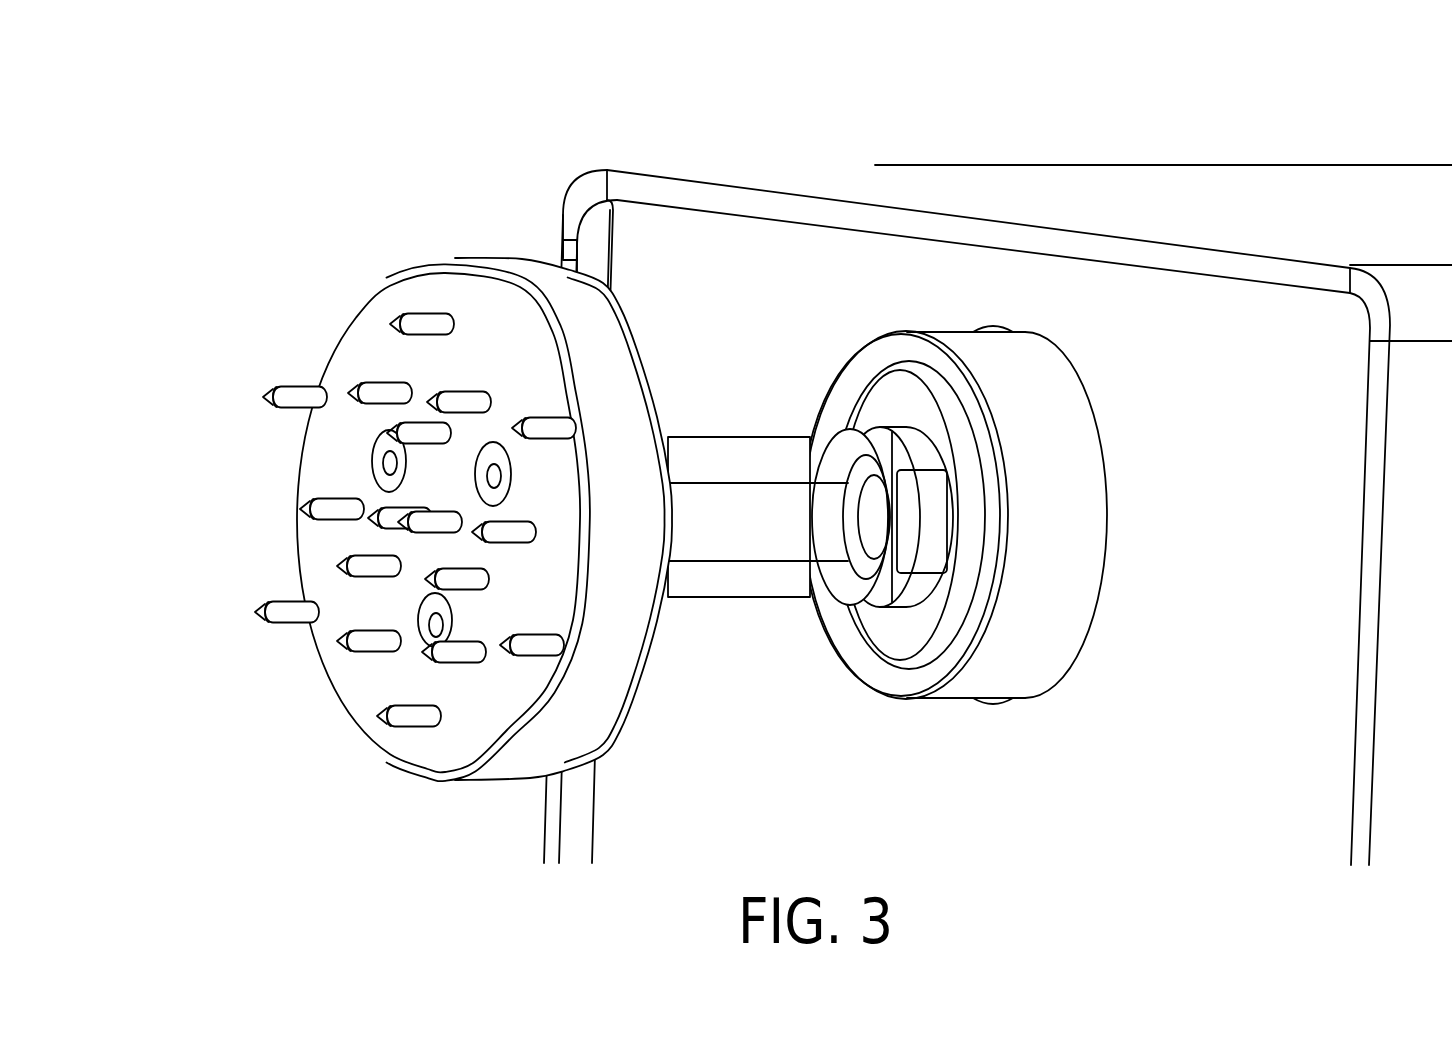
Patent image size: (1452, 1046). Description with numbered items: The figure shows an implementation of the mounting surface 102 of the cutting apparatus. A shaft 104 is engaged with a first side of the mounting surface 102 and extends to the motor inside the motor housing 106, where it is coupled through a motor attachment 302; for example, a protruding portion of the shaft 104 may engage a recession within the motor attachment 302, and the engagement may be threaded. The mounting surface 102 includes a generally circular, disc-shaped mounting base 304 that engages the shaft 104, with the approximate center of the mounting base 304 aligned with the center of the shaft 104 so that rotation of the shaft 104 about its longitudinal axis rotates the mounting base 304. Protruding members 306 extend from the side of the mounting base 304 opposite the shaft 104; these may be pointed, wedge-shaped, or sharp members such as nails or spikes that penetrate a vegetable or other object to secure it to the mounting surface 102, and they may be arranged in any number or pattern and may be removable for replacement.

The mounting surface 102 is at (272, 116).
The shaft 104 is at (737, 467).
The motor housing 106 is at (1190, 208).
The motor attachment 302 is at (860, 447).
The mounting base 304 is at (390, 299).
The protruding members 306 is at (288, 612).